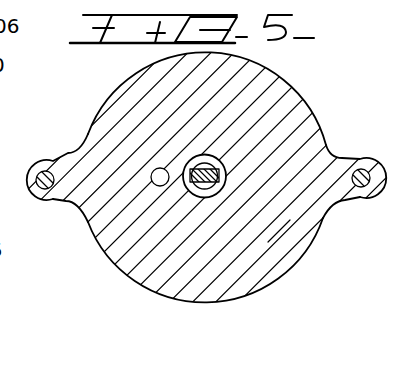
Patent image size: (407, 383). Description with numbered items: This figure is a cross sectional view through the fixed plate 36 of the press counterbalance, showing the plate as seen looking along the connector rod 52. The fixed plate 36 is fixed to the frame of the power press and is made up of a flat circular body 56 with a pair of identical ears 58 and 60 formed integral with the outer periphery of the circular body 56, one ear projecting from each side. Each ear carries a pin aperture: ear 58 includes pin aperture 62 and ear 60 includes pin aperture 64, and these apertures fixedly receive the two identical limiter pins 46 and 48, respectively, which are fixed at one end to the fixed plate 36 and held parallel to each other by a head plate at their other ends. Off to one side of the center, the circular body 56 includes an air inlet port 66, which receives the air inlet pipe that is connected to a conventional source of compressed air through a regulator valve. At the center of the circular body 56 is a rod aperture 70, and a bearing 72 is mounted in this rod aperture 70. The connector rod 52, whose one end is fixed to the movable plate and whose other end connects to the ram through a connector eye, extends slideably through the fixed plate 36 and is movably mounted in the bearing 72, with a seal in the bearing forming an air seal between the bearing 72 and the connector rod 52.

The fixed plate 36 is at (165, 283).
The limiter pin 46 is at (42, 181).
The limiter pin 48 is at (367, 194).
The connector rod 52 is at (190, 157).
The flat circular body 56 is at (282, 237).
The ear 58 is at (63, 157).
The ear 60 is at (341, 163).
The pin aperture 62 is at (45, 193).
The pin aperture 64 is at (364, 173).
The air inlet port 66 is at (160, 187).
The rod aperture 70 is at (202, 197).
The bearing 72 is at (213, 155).